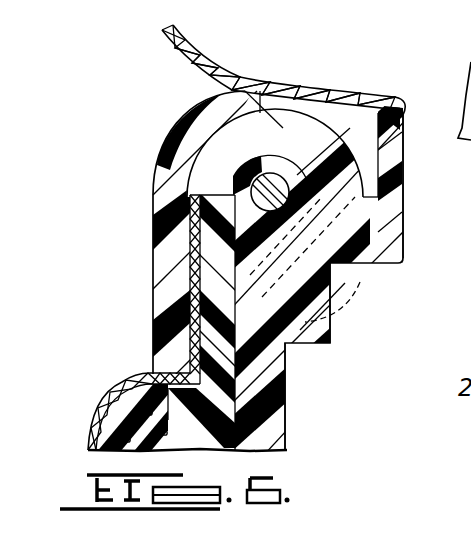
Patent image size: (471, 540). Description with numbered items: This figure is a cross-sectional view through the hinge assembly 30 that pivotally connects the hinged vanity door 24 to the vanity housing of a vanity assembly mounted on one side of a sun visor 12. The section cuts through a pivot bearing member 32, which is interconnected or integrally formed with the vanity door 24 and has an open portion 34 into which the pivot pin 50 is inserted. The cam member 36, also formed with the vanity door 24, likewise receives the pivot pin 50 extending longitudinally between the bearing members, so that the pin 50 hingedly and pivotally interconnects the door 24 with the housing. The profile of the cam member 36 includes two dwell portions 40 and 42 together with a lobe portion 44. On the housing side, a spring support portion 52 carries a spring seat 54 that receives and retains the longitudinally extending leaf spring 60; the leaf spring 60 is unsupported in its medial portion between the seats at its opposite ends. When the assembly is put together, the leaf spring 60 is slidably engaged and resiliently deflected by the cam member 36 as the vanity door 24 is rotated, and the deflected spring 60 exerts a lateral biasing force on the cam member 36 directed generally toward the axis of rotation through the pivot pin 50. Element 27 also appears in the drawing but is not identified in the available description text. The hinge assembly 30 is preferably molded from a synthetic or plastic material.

The sun visor 12 is at (208, 52).
The vanity door 24 is at (93, 390).
The base wall 27 is at (263, 429).
The hinge assembly 30 is at (393, 322).
The pivot bearing member 32 is at (290, 177).
The open portion 34 is at (261, 172).
The cam member 36 is at (283, 128).
The dwell portion 40 is at (395, 189).
The dwell portion 42 is at (405, 242).
The lobe portion 44 is at (363, 209).
The pivot pin 50 is at (286, 188).
The spring support portion 52 is at (352, 282).
The spring seat 54 is at (312, 322).
The leaf spring 60 is at (345, 283).